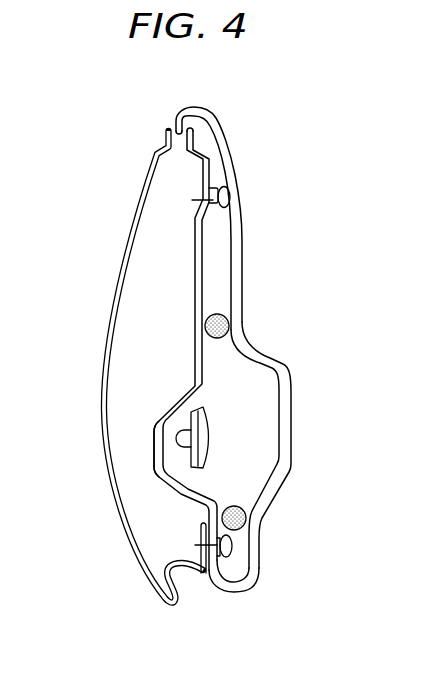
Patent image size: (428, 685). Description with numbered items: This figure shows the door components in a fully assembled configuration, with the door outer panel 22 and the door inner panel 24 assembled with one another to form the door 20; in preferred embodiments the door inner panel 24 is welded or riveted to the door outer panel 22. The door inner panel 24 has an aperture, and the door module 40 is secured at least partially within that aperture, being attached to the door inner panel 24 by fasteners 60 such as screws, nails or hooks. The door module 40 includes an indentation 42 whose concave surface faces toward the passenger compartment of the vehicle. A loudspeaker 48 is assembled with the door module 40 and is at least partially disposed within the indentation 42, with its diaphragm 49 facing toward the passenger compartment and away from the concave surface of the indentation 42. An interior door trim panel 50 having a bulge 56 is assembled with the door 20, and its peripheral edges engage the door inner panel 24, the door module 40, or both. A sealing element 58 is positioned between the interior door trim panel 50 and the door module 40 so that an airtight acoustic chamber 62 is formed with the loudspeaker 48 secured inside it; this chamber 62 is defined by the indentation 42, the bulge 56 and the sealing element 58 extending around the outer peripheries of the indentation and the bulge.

The door 20 is at (146, 115).
The door outer panel 22 is at (105, 343).
The door inner panel 24 is at (197, 577).
The door module 40 is at (187, 300).
The indentation 42 is at (183, 408).
The loudspeaker 48 is at (193, 460).
The diaphragm 49 is at (210, 438).
The interior door trim panel 50 is at (247, 243).
The bulge 56 is at (295, 410).
The sealing element 58 is at (230, 328).
The fasteners 60 is at (227, 197).
The airtight acoustic chamber 62 is at (258, 473).